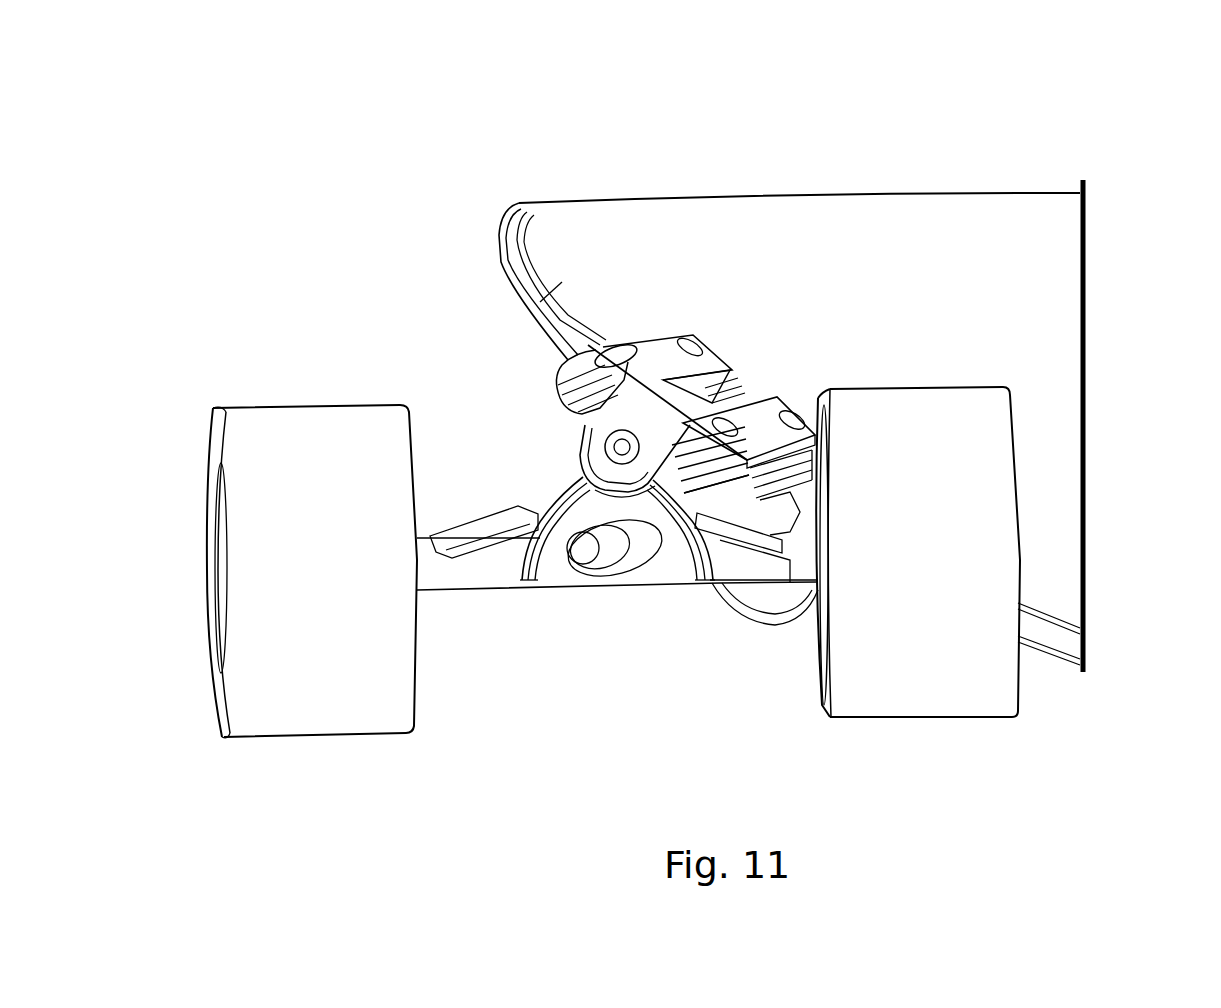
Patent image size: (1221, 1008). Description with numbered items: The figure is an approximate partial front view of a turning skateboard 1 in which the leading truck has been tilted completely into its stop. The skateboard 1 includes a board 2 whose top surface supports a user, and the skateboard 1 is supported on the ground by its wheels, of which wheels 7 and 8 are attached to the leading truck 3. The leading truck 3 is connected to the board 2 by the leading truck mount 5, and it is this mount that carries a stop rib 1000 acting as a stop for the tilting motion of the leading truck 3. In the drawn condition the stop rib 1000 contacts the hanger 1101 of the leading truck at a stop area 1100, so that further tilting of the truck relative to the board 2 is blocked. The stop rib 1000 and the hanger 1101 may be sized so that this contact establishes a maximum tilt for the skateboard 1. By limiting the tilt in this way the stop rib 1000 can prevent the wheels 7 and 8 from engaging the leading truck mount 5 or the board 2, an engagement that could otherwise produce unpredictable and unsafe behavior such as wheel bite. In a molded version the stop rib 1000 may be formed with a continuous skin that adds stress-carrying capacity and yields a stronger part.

The skateboard 1 is at (305, 162).
The board 2 is at (700, 208).
The leading truck 3 is at (727, 338).
The leading truck mount 5 is at (541, 358).
The wheel 7 is at (998, 678).
The wheel 8 is at (268, 423).
The stop rib 1000 is at (828, 498).
The stop area 1100 is at (796, 547).
The hanger 1101 is at (775, 590).